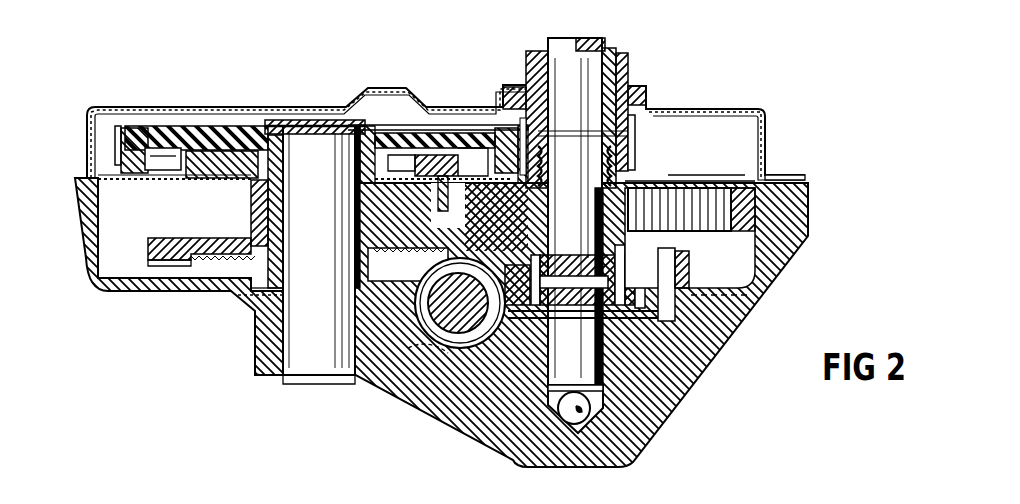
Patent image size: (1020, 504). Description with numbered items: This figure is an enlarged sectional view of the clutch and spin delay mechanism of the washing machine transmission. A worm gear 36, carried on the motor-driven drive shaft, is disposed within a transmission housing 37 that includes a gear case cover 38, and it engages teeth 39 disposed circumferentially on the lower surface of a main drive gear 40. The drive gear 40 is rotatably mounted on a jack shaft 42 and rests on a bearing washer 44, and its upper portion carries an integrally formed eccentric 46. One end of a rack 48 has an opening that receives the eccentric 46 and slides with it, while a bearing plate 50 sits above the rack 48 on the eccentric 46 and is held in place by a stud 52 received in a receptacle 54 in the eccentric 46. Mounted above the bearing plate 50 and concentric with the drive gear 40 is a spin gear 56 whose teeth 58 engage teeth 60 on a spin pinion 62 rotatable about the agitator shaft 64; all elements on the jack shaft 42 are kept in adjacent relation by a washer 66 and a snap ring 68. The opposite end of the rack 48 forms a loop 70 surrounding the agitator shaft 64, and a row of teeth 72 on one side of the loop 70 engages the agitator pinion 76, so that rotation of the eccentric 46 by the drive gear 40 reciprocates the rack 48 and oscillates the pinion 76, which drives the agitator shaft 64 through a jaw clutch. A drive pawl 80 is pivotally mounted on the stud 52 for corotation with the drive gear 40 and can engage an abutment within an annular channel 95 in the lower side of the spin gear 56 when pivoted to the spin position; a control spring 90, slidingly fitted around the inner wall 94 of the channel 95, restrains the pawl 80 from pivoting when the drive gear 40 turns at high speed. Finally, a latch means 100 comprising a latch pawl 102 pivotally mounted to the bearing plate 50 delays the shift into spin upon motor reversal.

The worm gear 36 is at (418, 352).
The transmission housing 37 is at (447, 418).
The gear case cover 38 is at (338, 98).
The teeth 39 is at (160, 260).
The main drive gear 40 is at (180, 231).
The jack shaft 42 is at (248, 195).
The bearing washer 44 is at (250, 306).
The eccentric 46 is at (350, 190).
The rack 48 is at (749, 168).
The bearing plate 50 is at (178, 222).
The stud 52 is at (485, 135).
The receptacle 54 is at (513, 296).
The spin gear 56 is at (205, 120).
The teeth 58 is at (112, 128).
The teeth 60 is at (625, 127).
The spin pinion 62 is at (614, 65).
The agitator shaft 64 is at (588, 31).
The washer 66 is at (263, 117).
The snap ring 68 is at (280, 112).
The loop 70 is at (718, 168).
The teeth 72 is at (642, 172).
The agitator pinion 76 is at (668, 235).
The drive pawl 80 is at (420, 147).
The control spring 90 is at (227, 155).
The inner wall 94 is at (382, 126).
The annular channel 95 is at (170, 150).
The latch means 100 is at (138, 172).
The latch pawl 102 is at (168, 172).